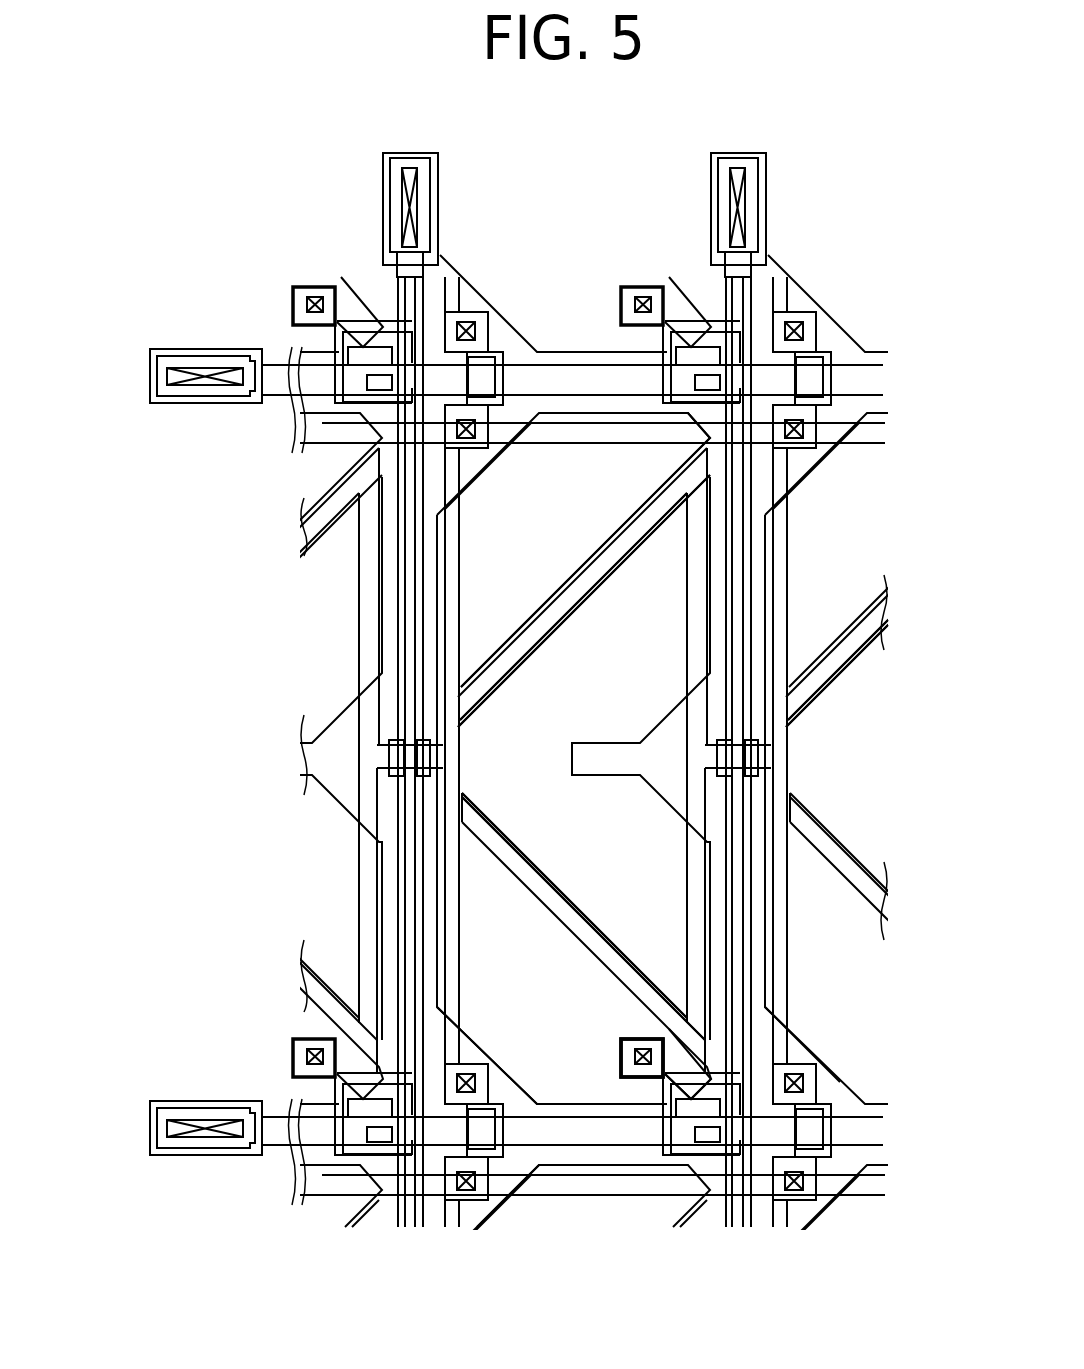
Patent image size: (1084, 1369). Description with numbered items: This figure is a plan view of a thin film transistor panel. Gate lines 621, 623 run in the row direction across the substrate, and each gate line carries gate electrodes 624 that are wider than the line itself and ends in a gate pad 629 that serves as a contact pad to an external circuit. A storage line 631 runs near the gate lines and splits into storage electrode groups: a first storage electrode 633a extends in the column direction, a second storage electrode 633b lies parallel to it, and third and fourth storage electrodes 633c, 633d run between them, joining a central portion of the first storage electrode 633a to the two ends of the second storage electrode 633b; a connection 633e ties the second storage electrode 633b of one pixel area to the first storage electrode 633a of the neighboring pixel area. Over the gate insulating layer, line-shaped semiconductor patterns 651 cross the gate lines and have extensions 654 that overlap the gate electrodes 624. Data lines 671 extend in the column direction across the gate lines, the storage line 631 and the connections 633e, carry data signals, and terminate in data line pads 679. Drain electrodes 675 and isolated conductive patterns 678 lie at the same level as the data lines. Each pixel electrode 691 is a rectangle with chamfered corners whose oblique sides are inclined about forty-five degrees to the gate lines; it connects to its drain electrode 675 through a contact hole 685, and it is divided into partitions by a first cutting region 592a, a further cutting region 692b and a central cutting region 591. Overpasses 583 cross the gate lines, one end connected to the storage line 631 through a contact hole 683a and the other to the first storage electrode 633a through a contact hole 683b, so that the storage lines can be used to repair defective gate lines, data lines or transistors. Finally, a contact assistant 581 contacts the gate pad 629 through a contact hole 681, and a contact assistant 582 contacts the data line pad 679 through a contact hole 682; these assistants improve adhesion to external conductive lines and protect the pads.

The contact assistant 582 is at (383, 206).
The data line pad 679 is at (438, 176).
The contact hole 682 is at (420, 206).
The overpass 583 is at (472, 317).
The gate line 621 is at (567, 390).
The gate line 623 is at (715, 1196).
The storage line 631 is at (555, 432).
The first storage electrode 633a is at (440, 592).
The second storage electrode 633b is at (790, 658).
The third storage electrode 633c is at (586, 568).
The fourth storage electrode 633d is at (513, 868).
The connection 633e is at (780, 750).
The line-shaped semiconductor pattern 651 is at (735, 540).
The data line 671 is at (417, 910).
The pixel electrode 692b is at (510, 636).
The central cutting region 591 is at (770, 735).
The first cutting region 592a is at (765, 1000).
The contact hole 683a is at (462, 1193).
The contact hole 683b is at (468, 1072).
The contact hole 685 is at (630, 1058).
The contact assistant 581 is at (150, 1126).
The contact hole 681 is at (205, 1118).
The gate pad 629 is at (205, 1152).
The isolated conductive pattern 678 is at (533, 1172).
The pixel electrode 691 is at (567, 1108).
The drain electrode 675 is at (625, 1078).
The extension 654 is at (662, 1140).
The gate electrode 624 is at (687, 1168).